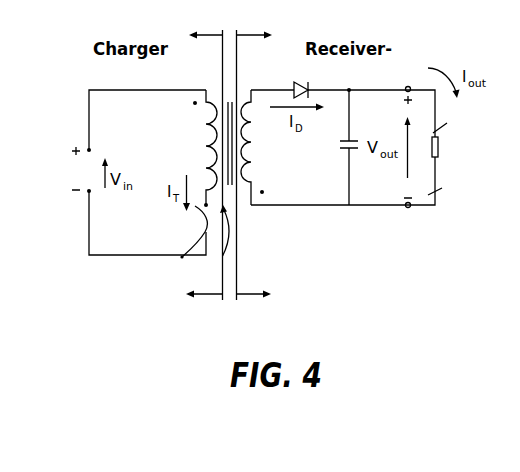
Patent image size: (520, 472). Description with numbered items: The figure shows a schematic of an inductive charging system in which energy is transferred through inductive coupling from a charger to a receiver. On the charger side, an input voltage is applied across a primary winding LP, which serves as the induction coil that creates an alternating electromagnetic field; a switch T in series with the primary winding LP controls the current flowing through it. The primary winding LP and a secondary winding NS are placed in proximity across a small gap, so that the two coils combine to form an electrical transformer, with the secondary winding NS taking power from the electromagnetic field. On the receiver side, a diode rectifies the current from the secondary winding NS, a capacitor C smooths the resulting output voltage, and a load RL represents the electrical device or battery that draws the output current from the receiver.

The primary winding (inductance L_P, N_P turns) LP is at (189, 148).
The secondary winding (N_S turns) NS is at (268, 147).
The switch transistor T is at (193, 232).
The output capacitor C is at (340, 146).
The load resistor RL is at (446, 159).